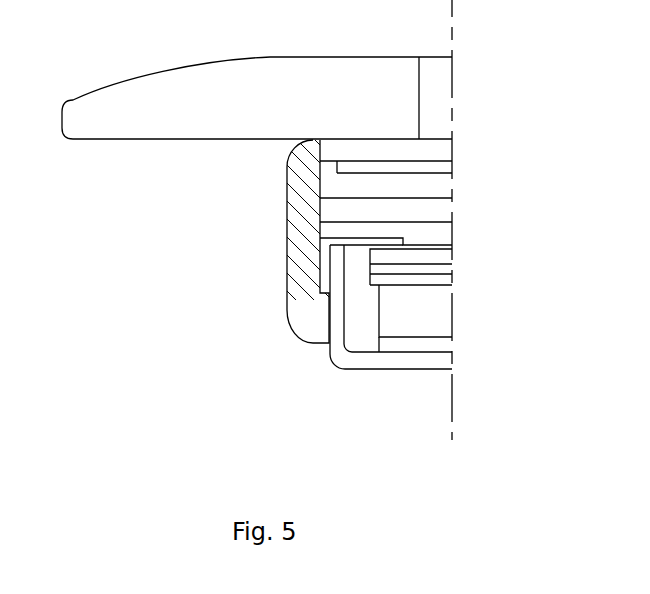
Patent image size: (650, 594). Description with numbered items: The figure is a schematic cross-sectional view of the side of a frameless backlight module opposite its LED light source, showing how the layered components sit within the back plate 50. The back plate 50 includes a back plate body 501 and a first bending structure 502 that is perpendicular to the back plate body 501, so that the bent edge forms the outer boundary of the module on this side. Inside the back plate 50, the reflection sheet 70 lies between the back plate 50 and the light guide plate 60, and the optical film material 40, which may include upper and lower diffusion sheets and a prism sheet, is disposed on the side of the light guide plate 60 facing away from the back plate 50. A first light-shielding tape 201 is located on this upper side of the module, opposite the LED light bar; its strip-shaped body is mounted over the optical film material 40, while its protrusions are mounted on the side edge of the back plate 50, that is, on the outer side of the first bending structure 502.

The first light-shielding tape 201 is at (330, 245).
The back plate 50 is at (183, 308).
The back plate body 501 is at (392, 355).
The first bending structure 502 is at (333, 310).
The optical film material 40 is at (418, 271).
The light guide plate 60 is at (418, 311).
The reflection sheet 70 is at (418, 345).